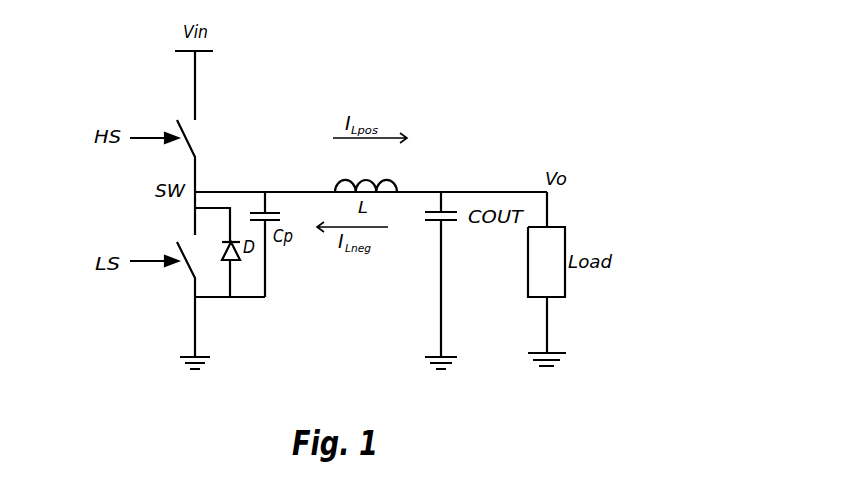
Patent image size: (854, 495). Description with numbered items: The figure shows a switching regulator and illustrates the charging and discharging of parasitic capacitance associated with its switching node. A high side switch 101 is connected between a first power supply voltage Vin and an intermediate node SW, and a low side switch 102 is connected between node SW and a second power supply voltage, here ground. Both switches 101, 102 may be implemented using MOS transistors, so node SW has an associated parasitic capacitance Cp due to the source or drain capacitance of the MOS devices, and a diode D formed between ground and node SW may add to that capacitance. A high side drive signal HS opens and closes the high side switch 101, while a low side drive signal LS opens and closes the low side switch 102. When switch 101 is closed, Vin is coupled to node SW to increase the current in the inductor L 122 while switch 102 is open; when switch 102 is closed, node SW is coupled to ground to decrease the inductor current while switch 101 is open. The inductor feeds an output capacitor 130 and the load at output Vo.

The high side switch 101 is at (202, 156).
The low side switch 102 is at (176, 288).
The inductor 122 is at (367, 177).
The output capacitor 130 is at (433, 222).